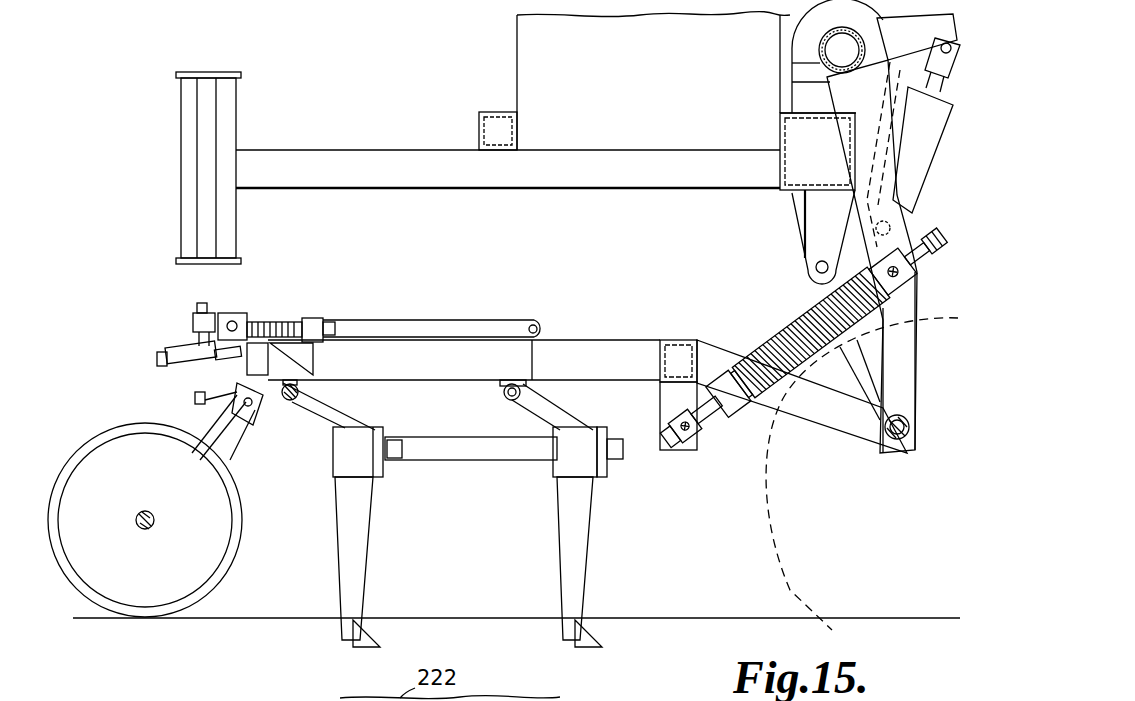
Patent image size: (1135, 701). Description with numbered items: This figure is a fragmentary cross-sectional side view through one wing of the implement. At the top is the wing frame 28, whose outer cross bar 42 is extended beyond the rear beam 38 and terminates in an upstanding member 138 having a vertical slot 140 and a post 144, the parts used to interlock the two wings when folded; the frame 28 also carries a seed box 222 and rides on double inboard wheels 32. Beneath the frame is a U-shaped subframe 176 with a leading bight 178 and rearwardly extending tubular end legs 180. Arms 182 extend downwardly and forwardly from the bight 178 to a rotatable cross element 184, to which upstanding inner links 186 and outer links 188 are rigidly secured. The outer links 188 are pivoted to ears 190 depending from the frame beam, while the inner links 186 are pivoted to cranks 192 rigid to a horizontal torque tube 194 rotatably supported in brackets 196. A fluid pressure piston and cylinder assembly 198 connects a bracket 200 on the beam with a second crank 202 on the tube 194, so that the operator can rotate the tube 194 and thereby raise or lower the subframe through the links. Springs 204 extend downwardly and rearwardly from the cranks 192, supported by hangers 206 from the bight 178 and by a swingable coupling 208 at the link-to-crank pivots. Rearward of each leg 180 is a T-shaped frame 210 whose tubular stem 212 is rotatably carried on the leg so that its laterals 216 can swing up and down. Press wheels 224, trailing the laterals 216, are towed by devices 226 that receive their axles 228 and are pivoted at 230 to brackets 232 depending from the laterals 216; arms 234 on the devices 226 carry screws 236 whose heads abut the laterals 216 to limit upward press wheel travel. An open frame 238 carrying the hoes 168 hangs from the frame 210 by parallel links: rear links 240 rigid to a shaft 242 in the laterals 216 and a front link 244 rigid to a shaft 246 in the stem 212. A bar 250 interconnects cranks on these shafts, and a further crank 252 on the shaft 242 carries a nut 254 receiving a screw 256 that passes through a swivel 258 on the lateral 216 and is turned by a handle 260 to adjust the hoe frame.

The wing frame 28 is at (548, 195).
The double inboard wheels 32 is at (762, 540).
The rear beam 38 is at (478, 125).
The outer cross bar 42 is at (370, 188).
The upstanding member 138 is at (197, 68).
The vertical slot 140 is at (210, 108).
The post 144 is at (220, 205).
The hoes 168 is at (362, 548).
The U-shaped subframe 176 is at (645, 335).
The leading bight 178 is at (700, 348).
The end legs 180 is at (593, 381).
The arms 182 is at (846, 428).
The cross elements 184 is at (910, 440).
The inner links 186 is at (905, 345).
The outer links 188 is at (818, 292).
The ears 190 is at (808, 242).
The cranks 192 is at (868, 137).
The torque tube 194 is at (818, 60).
The brackets 196 is at (800, 22).
The piston and cylinder assembly 198 is at (938, 143).
The bracket 200 is at (855, 220).
The second crank 202 is at (928, 14).
The springs 204 is at (792, 402).
The hangers 206 is at (688, 444).
The swingable coupling 208 is at (904, 286).
The T-shaped frame 210 is at (462, 328).
The tubular stem 212 is at (429, 382).
The laterals 216 is at (296, 313).
The seed boxes 222 is at (516, 28).
The press wheels 224 is at (252, 532).
The towing devices 226 is at (214, 445).
The axles 228 is at (136, 522).
The pivot 230 is at (237, 424).
The brackets 232 is at (196, 398).
The arms 234 is at (192, 368).
The screws 236 is at (162, 352).
The open frame 238 is at (452, 465).
The rear links 240 is at (338, 400).
The shaft 242 is at (295, 402).
The front link 244 is at (540, 412).
The shaft 246 is at (513, 383).
The bar 250 is at (412, 322).
The crank 252 is at (316, 352).
The nut 254 is at (320, 318).
The screw 256 is at (352, 322).
The swivel 258 is at (255, 313).
The handle 260 is at (190, 322).